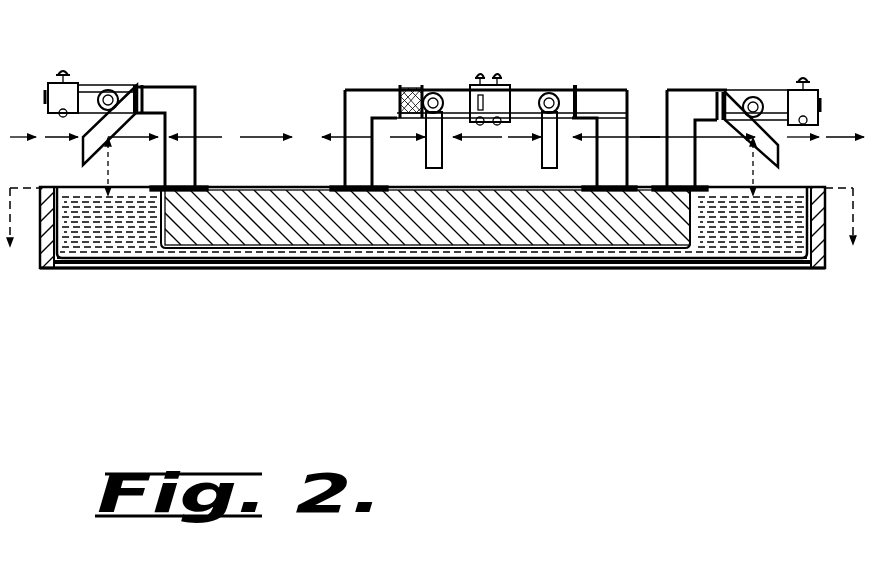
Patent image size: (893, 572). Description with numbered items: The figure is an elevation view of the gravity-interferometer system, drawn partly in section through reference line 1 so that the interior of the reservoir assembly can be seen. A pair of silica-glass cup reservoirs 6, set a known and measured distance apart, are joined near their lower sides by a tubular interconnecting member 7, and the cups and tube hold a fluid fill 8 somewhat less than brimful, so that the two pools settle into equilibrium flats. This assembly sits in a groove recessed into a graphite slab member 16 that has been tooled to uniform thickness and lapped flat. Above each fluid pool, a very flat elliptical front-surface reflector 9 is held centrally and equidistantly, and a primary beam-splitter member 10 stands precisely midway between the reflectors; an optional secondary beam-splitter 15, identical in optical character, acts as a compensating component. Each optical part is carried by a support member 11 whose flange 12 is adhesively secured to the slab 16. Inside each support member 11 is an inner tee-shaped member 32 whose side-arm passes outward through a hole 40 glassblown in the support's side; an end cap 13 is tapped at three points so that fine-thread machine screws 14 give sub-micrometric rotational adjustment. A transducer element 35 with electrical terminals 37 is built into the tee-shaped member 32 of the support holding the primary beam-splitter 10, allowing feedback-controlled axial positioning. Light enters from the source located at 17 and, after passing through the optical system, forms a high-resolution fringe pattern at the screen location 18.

The reference line 1— 1 is at (429, 228).
The cup reservoir 6 is at (52, 268).
The tubular interconnecting member 7 is at (348, 262).
The fluid fill 8 is at (728, 255).
The front-surface reflector 9 is at (780, 155).
The primary beam-splitter member 10 is at (443, 155).
The support member 11 is at (168, 87).
The flange 12 is at (205, 185).
The end cap 13 is at (506, 87).
The adjustment fine-thread machine screw 14 is at (803, 80).
The secondary beam-splitter 15 is at (558, 155).
The graphite slab member 16 is at (135, 268).
The light source location 17 is at (15, 139).
The screen location 18 is at (848, 137).
The inner tee-shaped member 32 is at (48, 85).
The transducer element 35 is at (412, 90).
The electrical terminal 37 is at (397, 100).
The hole 40 is at (110, 88).